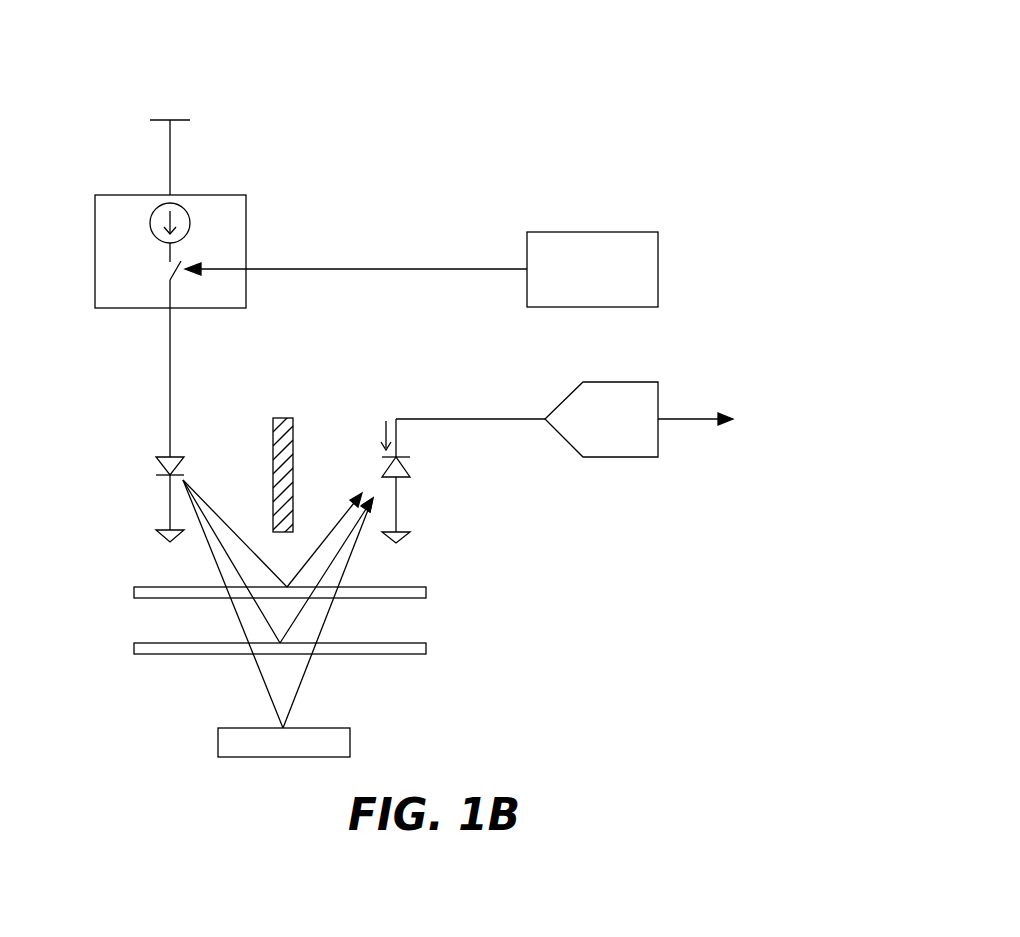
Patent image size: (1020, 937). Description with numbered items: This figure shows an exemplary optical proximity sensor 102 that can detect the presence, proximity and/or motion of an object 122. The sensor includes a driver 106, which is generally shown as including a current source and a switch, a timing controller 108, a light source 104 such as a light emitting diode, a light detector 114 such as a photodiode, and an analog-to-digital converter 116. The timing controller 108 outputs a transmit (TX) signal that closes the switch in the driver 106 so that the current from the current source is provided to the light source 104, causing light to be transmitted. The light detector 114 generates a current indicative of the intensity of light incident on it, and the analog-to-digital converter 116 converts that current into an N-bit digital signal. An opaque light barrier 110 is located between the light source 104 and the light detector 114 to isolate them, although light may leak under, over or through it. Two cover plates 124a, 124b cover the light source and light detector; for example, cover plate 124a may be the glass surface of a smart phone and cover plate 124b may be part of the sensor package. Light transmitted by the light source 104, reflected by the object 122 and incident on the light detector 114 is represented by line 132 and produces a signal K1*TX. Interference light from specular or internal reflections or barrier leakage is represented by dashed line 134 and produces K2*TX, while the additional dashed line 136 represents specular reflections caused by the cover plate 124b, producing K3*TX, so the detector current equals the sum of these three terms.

The optical proximity sensor 102 is at (415, 32).
The light source 104 is at (161, 454).
The driver 106 is at (112, 190).
The timing controller 108 is at (597, 255).
The opaque light barrier 110 is at (305, 469).
The light detector 114 is at (445, 478).
The analog-to-digital converter 116 is at (660, 405).
The object 122 is at (306, 730).
The cover plate 124a is at (400, 647).
The cover plate 124b is at (400, 591).
The line representing light reflected by the object 132 is at (310, 662).
The dashed line representing interference light 134 is at (338, 553).
The dashed line representing specular reflections from cover plate 124b 136 is at (356, 498).